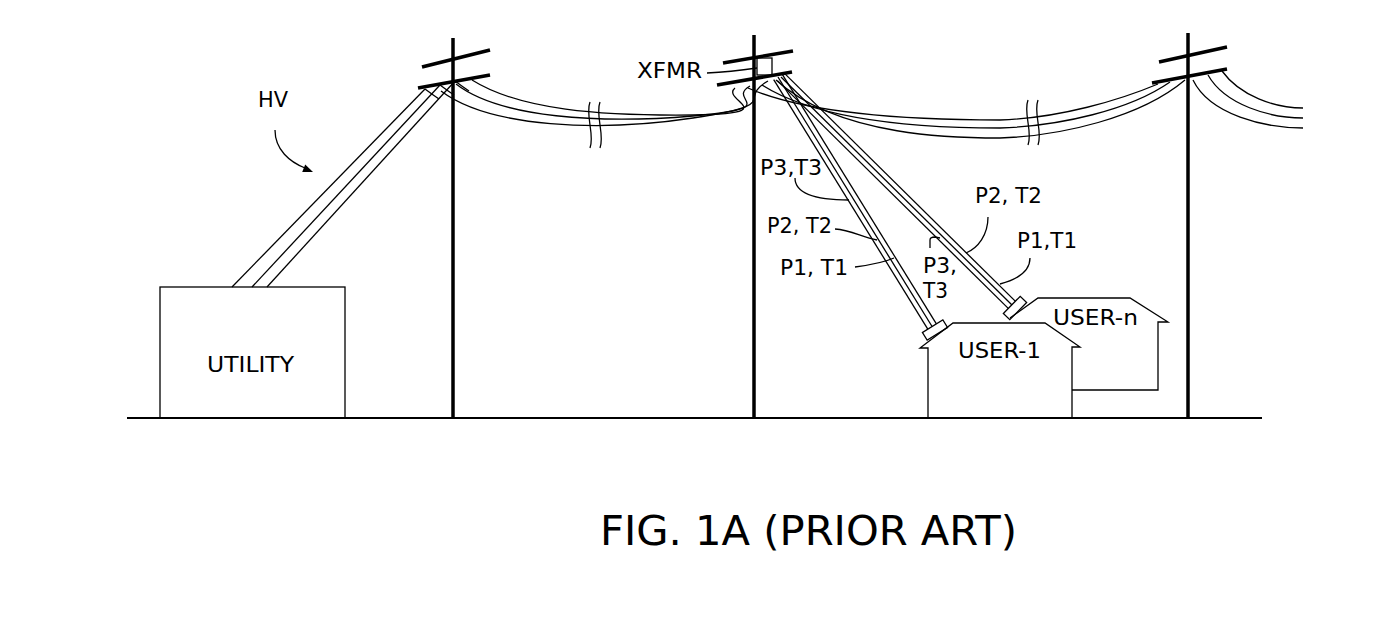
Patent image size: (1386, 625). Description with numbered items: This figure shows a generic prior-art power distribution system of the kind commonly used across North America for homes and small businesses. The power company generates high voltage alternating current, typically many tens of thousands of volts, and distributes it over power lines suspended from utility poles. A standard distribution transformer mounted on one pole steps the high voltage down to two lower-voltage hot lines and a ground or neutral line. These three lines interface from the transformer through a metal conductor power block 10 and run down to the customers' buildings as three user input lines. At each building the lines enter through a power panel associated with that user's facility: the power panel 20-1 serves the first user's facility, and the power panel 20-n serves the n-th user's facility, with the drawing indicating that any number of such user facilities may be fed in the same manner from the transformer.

The metal conductor power block 10 is at (772, 70).
The power panel 20-1 is at (923, 336).
The power panel 20-n is at (1027, 296).